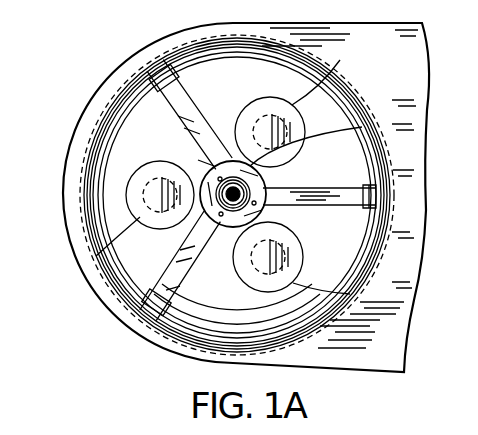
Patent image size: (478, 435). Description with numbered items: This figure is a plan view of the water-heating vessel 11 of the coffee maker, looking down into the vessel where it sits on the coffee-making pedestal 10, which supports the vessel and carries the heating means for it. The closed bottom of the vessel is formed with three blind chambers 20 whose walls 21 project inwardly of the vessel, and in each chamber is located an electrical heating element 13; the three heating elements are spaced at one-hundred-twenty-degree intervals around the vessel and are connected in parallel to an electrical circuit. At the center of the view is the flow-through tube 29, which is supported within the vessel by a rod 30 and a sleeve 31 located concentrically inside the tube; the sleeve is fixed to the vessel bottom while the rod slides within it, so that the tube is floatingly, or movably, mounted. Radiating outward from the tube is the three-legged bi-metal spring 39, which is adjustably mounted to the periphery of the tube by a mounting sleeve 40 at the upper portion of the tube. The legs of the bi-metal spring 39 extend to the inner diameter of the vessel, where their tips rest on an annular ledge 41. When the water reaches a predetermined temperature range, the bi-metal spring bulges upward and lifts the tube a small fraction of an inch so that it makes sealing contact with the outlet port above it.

The coffee-making pedestal 10 is at (76, 149).
The water-heating vessel 11 is at (381, 147).
The electrical heating element 13 is at (272, 106).
The blind chamber 20 is at (351, 90).
The chamber wall 21 is at (322, 79).
The flow-through tube 29 is at (186, 229).
The rod 30 is at (235, 177).
The sleeve 31 is at (246, 199).
The three-legged bi-metal spring 39 is at (178, 124).
The mounting sleeve 40 is at (304, 158).
The annular ledge 41 is at (152, 84).